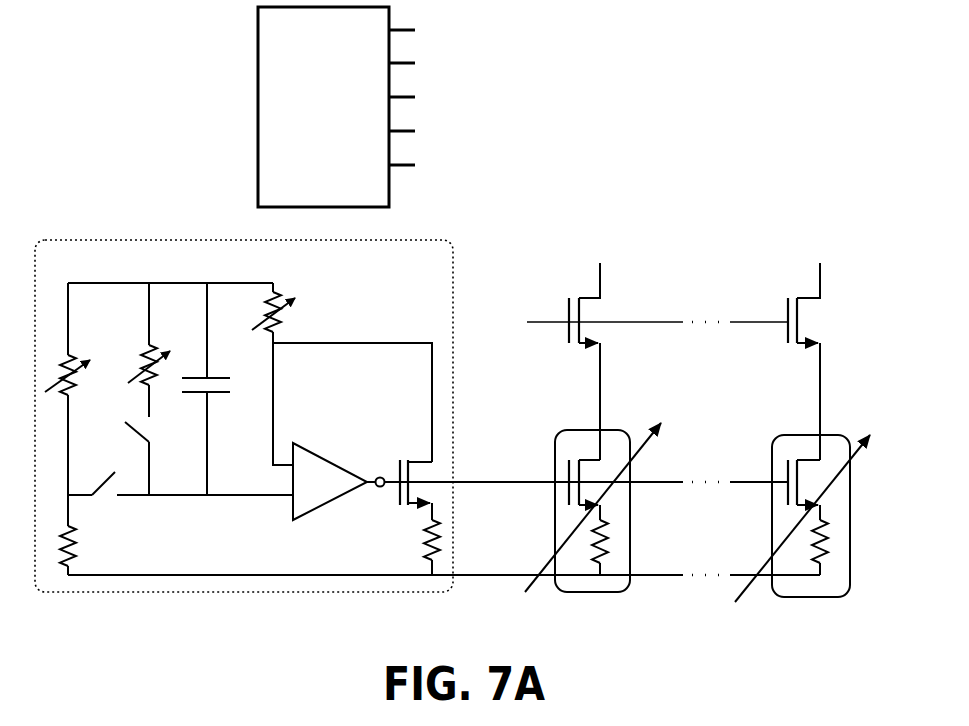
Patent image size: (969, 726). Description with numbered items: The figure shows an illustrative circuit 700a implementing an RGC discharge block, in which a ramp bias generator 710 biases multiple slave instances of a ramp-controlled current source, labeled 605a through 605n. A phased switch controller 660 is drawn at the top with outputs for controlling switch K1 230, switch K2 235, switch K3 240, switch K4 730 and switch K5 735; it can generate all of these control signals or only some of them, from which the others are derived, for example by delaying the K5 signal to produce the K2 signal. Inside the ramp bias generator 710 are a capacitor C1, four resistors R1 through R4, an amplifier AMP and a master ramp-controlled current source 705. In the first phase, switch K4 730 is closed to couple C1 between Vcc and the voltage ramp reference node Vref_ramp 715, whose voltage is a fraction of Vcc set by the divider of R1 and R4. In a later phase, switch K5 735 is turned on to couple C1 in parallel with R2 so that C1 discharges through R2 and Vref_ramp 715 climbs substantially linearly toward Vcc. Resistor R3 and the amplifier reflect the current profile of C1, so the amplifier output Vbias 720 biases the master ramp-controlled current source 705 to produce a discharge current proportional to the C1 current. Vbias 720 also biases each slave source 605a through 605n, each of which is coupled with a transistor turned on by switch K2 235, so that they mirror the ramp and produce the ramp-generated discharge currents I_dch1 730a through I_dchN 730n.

The current distribution circuit 700a is at (167, 98).
The phased switch controller 660 is at (305, 161).
The switch K1 230 is at (505, 46).
The switch K2 235 is at (505, 77).
The switch K3 240 is at (505, 111).
The switch K4 730 is at (505, 144).
The switch K5 735 is at (505, 177).
The ramp bias generator 710 is at (395, 333).
The voltage ramp reference node 715 is at (285, 557).
The Vbias 720 is at (377, 478).
The master ramp-controlled current source 705 is at (425, 452).
The ramp-generated discharge current I_dch1 730a is at (572, 244).
The ramp-generated discharge current I_dchN 730n is at (847, 244).
The ramp-controlled current source 605a is at (563, 632).
The ramp-controlled current source 605n is at (782, 632).